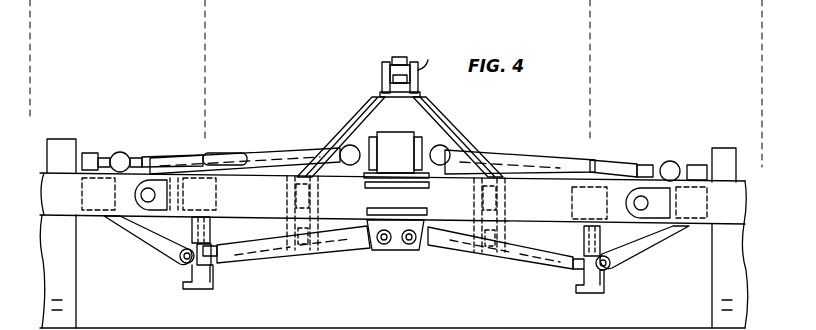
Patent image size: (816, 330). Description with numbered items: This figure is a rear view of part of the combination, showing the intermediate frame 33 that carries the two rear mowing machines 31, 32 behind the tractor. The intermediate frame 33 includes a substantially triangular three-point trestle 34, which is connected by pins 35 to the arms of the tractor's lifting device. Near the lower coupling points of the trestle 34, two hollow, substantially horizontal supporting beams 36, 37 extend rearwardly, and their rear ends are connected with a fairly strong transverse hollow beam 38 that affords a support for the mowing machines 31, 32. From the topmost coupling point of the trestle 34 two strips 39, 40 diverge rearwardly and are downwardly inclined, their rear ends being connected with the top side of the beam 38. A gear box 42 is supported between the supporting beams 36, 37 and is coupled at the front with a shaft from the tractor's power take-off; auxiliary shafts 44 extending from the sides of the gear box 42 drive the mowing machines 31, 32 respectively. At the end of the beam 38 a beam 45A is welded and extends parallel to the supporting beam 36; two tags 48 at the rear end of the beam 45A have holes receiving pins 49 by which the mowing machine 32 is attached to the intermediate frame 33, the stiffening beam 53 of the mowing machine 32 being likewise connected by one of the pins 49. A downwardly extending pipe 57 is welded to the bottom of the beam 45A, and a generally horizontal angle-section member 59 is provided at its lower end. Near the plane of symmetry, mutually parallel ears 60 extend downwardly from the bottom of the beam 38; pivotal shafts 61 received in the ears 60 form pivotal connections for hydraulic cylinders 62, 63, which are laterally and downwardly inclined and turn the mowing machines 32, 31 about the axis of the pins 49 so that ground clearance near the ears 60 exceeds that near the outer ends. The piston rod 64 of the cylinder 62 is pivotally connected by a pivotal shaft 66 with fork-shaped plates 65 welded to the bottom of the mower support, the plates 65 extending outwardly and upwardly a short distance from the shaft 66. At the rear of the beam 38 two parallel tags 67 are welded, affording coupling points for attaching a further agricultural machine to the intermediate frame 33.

The mowing machine 31 is at (70, 140).
The mowing machine 32 is at (728, 143).
The intermediate frame 33 is at (566, 150).
The three-point trestle 34 is at (384, 78).
The pins 35 is at (428, 60).
The supporting beam 36 is at (512, 193).
The supporting beam 37 is at (290, 190).
The hollow beam 38 is at (240, 176).
The strip 39 is at (433, 118).
The strip 40 is at (362, 112).
The gear box 42 is at (405, 132).
The auxiliary shafts 44 is at (276, 156).
The beam 45A is at (192, 158).
The tags 48 is at (156, 178).
The pins 49 is at (140, 195).
The stiffening beam 53 is at (88, 216).
The pipe 57 is at (211, 226).
The angle-section member 59 is at (205, 290).
The ears 60 is at (385, 250).
The pivotal shafts 61 is at (400, 250).
The hydraulic cylinder 62 is at (526, 262).
The hydraulic cylinder 63 is at (300, 262).
The piston rod 64 is at (570, 270).
The fork-shaped plates 65 is at (150, 245).
The pivotal shaft 66 is at (180, 266).
The tags 67 is at (428, 186).